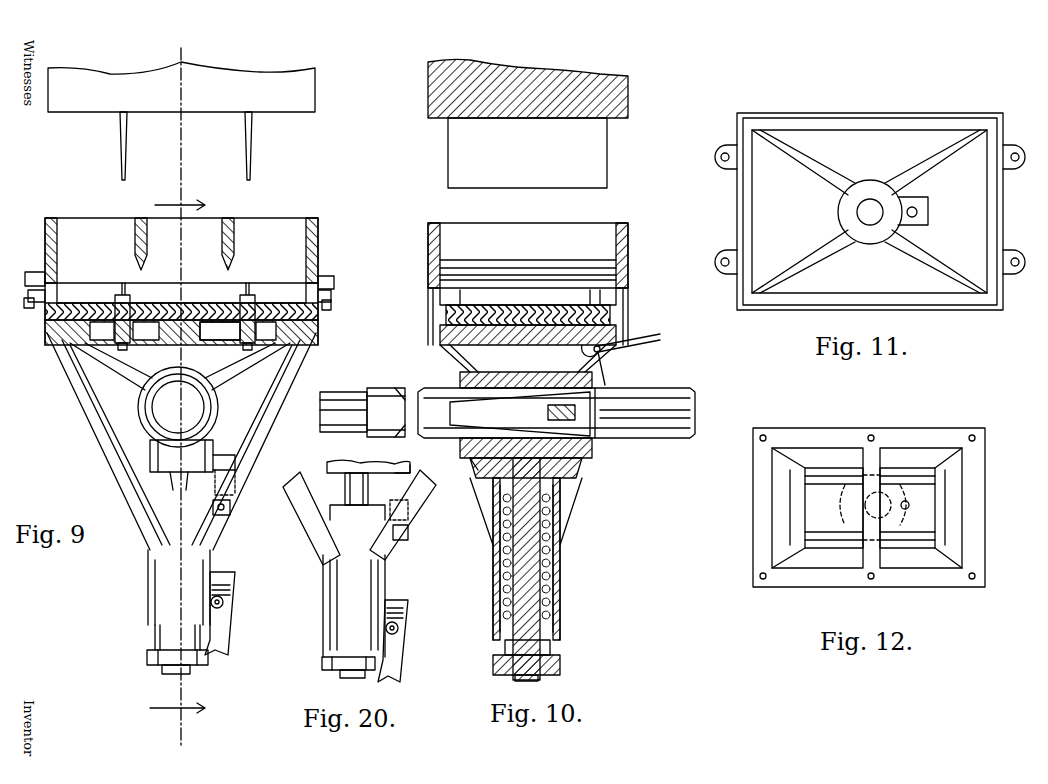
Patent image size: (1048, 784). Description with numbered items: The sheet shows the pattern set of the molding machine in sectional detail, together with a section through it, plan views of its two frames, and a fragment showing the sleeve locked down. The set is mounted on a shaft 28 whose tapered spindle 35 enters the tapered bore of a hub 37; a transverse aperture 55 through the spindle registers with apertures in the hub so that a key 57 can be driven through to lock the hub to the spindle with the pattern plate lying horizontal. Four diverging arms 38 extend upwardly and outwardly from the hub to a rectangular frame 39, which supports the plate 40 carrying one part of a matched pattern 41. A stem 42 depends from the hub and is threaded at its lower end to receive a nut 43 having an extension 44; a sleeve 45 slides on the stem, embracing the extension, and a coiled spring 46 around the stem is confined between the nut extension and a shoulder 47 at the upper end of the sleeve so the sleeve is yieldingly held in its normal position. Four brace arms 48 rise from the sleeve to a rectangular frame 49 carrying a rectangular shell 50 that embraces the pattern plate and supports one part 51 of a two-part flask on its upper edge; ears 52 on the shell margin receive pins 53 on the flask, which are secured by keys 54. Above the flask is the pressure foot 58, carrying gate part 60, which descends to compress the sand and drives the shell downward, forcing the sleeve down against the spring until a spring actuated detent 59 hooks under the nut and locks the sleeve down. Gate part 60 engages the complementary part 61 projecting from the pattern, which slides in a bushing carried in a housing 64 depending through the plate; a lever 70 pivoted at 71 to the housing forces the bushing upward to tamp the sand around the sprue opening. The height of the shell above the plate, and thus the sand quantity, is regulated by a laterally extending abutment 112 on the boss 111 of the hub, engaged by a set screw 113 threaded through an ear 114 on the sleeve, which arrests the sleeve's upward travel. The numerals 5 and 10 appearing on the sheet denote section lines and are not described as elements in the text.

In FIG. 9, the discharge tube 5 is at (158, 579).
In FIG. 9, the direction of movement 10 is at (177, 390).
In FIG. 10, the shaft 28 is at (662, 392).
In FIG. 10, the tapered spindle 35 is at (515, 363).
In FIG. 9, the hub 37 is at (192, 372).
In FIG. 20, the hub 37 is at (340, 462).
In FIG. 10, the hub 37 is at (582, 462).
In FIG. 12, the hub 37 is at (826, 527).
In FIG. 9, the diverging arms 38 is at (95, 370).
In FIG. 12, the diverging arms 38 is at (796, 473).
In FIG. 9, the rectangular frame 39 is at (172, 345).
In FIG. 10, the rectangular frame 39 is at (563, 372).
In FIG. 12, the rectangular frame 39 is at (828, 428).
In FIG. 9, the plate 40 is at (220, 329).
In FIG. 9, the pattern 41 is at (181, 293).
In FIG. 9, the stem 42 is at (188, 672).
In FIG. 20, the stem 42 is at (348, 489).
In FIG. 10, the stem 42 is at (560, 578).
In FIG. 9, the nut 43 is at (208, 662).
In FIG. 20, the nut 43 is at (322, 664).
In FIG. 10, the nut 43 is at (562, 662).
In FIG. 9, the extension 44 is at (155, 637).
In FIG. 10, the extension 44 is at (552, 642).
In FIG. 20, the sleeve 45 is at (335, 605).
In FIG. 10, the sleeve 45 is at (493, 568).
In FIG. 11, the sleeve 45 is at (876, 181).
In FIG. 10, the coiled spring 46 is at (553, 540).
In FIG. 10, the shoulder 47 is at (568, 492).
In FIG. 9, the brace arms 48 is at (100, 443).
In FIG. 20, the brace arms 48 is at (305, 520).
In FIG. 11, the brace arms 48 is at (800, 166).
In FIG. 11, the rectangular frame 49 is at (869, 211).
In FIG. 9, the rectangular shell 50 is at (320, 322).
In FIG. 10, the rectangular shell 50 is at (626, 300).
In FIG. 11, the rectangular shell 50 is at (852, 113).
In FIG. 9, the flask part 51 is at (318, 238).
In FIG. 10, the flask part 51 is at (628, 253).
In FIG. 9, the ears 52 is at (333, 284).
In FIG. 11, the ears 52 is at (722, 150).
In FIG. 9, the pins 53 is at (330, 308).
In FIG. 9, the keys 54 is at (330, 298).
In FIG. 10, the transverse aperture 55 is at (548, 418).
In FIG. 10, the key 57 is at (590, 418).
In FIG. 9, the pressure foot 58 is at (283, 68).
In FIG. 10, the pressure foot 58 is at (628, 92).
In FIG. 9, the spring actuated detent 59 is at (228, 628).
In FIG. 20, the spring actuated detent 59 is at (400, 652).
In FIG. 9, the gate part 60 is at (121, 142).
In FIG. 9, the complementary gate part 61 is at (120, 290).
In FIG. 10, the complementary gate part 61 is at (580, 299).
In FIG. 9, the housing 64 is at (133, 340).
In FIG. 10, the housing 64 is at (617, 327).
In FIG. 10, the lever 70 is at (655, 355).
In FIG. 10, the pivot 71 is at (608, 366).
In FIG. 9, the boss 111 is at (180, 474).
In FIG. 10, the boss 111 is at (490, 466).
In FIG. 9, the abutment 112 is at (232, 462).
In FIG. 20, the abutment 112 is at (405, 468).
In FIG. 9, the set screw 113 is at (232, 508).
In FIG. 20, the set screw 113 is at (410, 546).
In FIG. 9, the ear 114 is at (236, 484).
In FIG. 20, the ear 114 is at (408, 528).